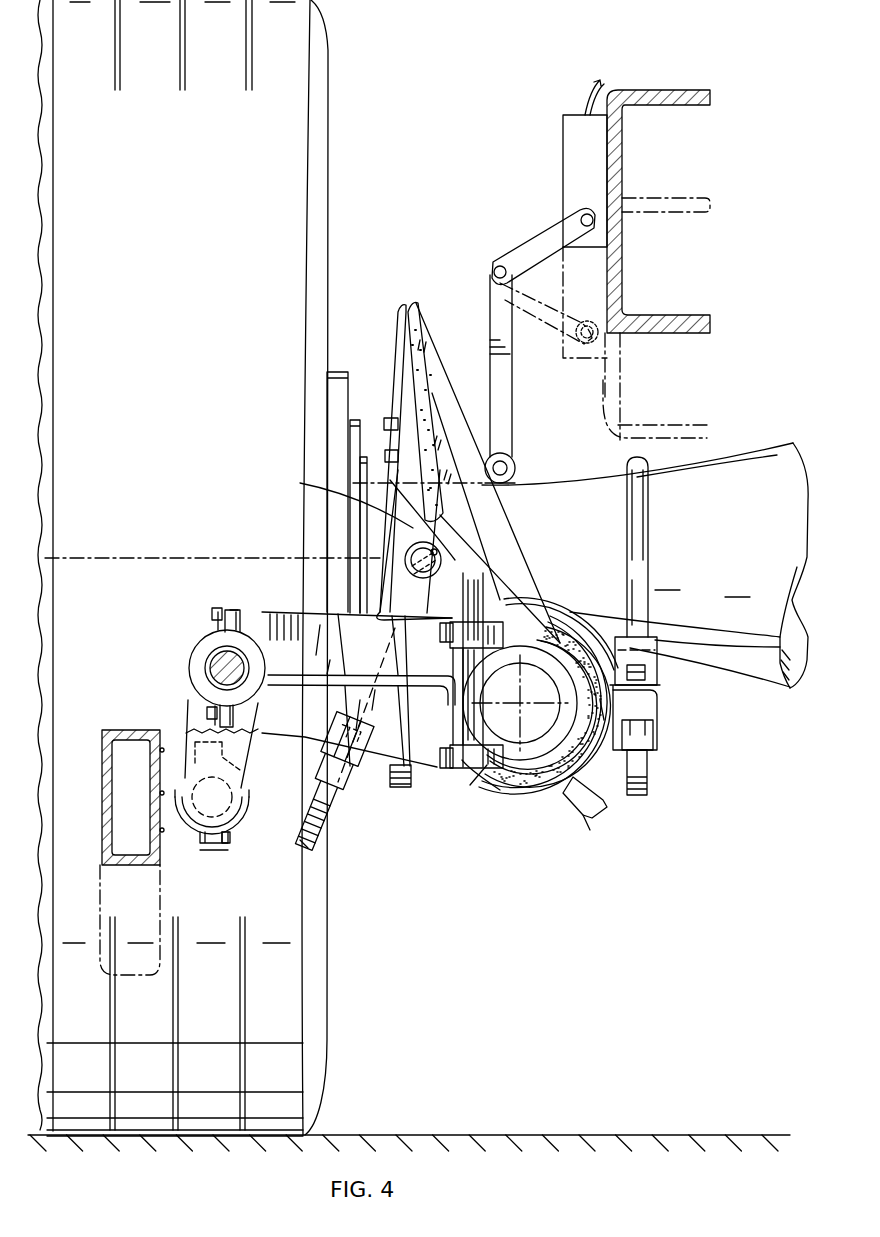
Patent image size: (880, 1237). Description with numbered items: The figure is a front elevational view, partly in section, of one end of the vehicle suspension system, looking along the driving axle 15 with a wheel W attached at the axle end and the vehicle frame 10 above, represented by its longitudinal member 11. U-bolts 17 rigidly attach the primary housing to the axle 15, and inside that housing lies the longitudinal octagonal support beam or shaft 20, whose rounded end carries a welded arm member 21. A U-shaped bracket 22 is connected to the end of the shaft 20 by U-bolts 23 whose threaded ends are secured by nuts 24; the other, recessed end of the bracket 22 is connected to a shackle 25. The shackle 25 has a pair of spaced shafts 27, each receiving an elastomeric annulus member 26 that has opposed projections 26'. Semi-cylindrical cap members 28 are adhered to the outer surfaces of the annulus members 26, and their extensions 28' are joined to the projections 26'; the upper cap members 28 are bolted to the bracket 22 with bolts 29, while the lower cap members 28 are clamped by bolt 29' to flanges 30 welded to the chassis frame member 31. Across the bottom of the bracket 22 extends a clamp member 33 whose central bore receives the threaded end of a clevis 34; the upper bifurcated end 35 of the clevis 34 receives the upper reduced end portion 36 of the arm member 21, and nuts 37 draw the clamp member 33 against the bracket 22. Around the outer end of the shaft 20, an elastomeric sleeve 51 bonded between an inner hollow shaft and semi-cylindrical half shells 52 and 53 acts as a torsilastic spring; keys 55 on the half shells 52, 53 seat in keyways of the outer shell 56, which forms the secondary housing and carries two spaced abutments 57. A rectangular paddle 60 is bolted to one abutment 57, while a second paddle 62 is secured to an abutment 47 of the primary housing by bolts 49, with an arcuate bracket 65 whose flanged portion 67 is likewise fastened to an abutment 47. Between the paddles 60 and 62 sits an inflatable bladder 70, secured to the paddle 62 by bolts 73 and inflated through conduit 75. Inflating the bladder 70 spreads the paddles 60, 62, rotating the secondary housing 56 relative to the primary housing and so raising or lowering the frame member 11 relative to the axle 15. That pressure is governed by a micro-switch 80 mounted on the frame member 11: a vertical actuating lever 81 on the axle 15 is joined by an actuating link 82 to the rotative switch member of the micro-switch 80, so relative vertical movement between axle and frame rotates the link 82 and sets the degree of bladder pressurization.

The vehicle frame 10 is at (655, 56).
The longitudinal member 11 is at (676, 97).
The driving axle 15 is at (760, 470).
The U-bolt 17 is at (640, 545).
The support beam or shaft 20 is at (508, 748).
The arm member 21 is at (497, 583).
The U-shaped bracket 22 is at (298, 625).
The U-bolt 23 is at (535, 762).
The nut 24 is at (455, 622).
The shackle 25 is at (258, 759).
The elastomeric annulus member 26 is at (181, 668).
The projection 26' is at (204, 710).
The shaft 27 is at (215, 658).
The semi-cylindrical cap member 28 is at (204, 725).
The extension 28' is at (213, 735).
The bolt 29 is at (179, 653).
The bolt 29' is at (249, 874).
The flange 30 is at (173, 745).
The chassis frame member 31 is at (100, 880).
The clamp member 33 is at (398, 790).
The clevis 34 is at (312, 848).
The upper bifurcated end 35 is at (397, 600).
The upper reduced end portion 36 is at (445, 555).
The nut 37 is at (352, 790).
The abutment 47 is at (650, 708).
The bolt 49 is at (640, 672).
The elastomeric sleeve 51 is at (580, 750).
The semi-cylindrical half shell 52 is at (568, 617).
The semi-cylindrical half shell 53 is at (522, 793).
The key 55 is at (603, 805).
The outer shell 56 is at (490, 797).
The abutment 57 is at (583, 812).
The paddle 60 is at (416, 314).
The paddle 62 is at (395, 330).
The arcuate bracket 65 is at (560, 583).
The flanged portion 67 is at (650, 684).
The inflatable bladder 70 is at (410, 350).
The bolt 73 is at (397, 455).
The conduit 75 is at (341, 498).
The micro-switch 80 is at (568, 145).
The actuating lever 81 is at (505, 412).
The actuating link 82 is at (537, 240).
The wheel W is at (290, 1060).